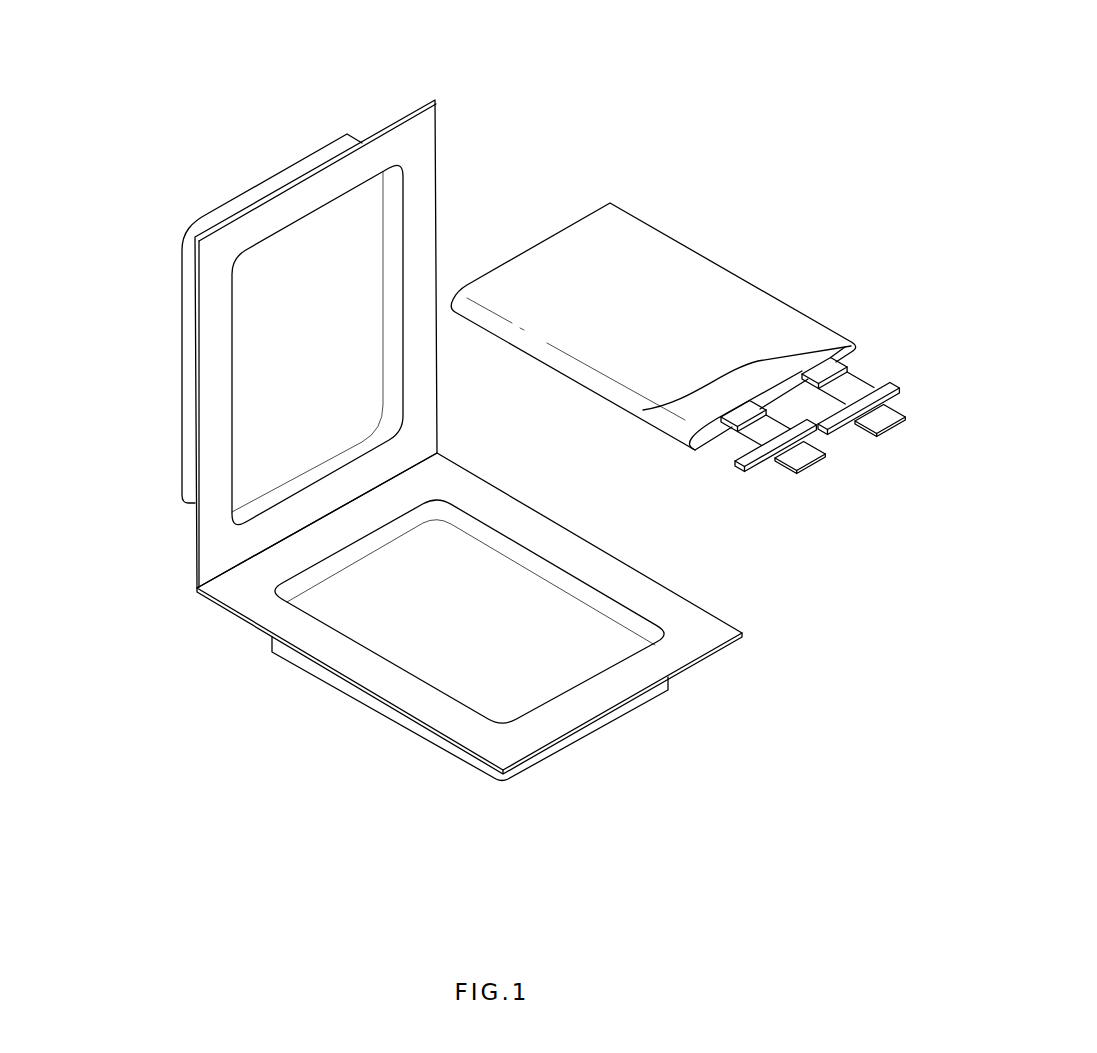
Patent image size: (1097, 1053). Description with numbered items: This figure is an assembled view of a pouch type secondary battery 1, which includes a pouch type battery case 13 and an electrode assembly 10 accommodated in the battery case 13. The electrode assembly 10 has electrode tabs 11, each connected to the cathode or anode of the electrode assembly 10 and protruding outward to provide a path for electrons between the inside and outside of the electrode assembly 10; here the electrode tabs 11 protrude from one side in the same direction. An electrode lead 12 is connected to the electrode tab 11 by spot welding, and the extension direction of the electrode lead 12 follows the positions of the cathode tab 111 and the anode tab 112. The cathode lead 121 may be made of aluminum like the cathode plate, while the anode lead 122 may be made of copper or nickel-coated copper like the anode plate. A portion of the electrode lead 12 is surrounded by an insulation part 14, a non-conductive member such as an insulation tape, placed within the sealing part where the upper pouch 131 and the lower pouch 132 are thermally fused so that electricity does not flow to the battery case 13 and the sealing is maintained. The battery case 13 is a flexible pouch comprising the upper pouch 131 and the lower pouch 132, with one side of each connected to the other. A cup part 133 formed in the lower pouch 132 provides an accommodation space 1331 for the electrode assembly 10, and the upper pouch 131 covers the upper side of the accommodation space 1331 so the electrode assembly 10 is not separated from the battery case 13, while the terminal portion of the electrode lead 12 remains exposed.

The pouch type secondary battery 1 is at (629, 81).
The electrode assembly 10 is at (778, 273).
The electrode tab 11 is at (547, 412).
The cathode tab 111 is at (645, 410).
The anode tab 112 is at (683, 428).
The electrode lead 12 is at (945, 458).
The cathode lead 121 is at (905, 425).
The anode lead 122 is at (822, 467).
The battery case 13 is at (102, 268).
The upper pouch 131 is at (187, 280).
The lower pouch 132 is at (230, 613).
The cup part 133 is at (377, 715).
The accommodation space 1331 is at (540, 688).
The insulation part 14 is at (874, 391).